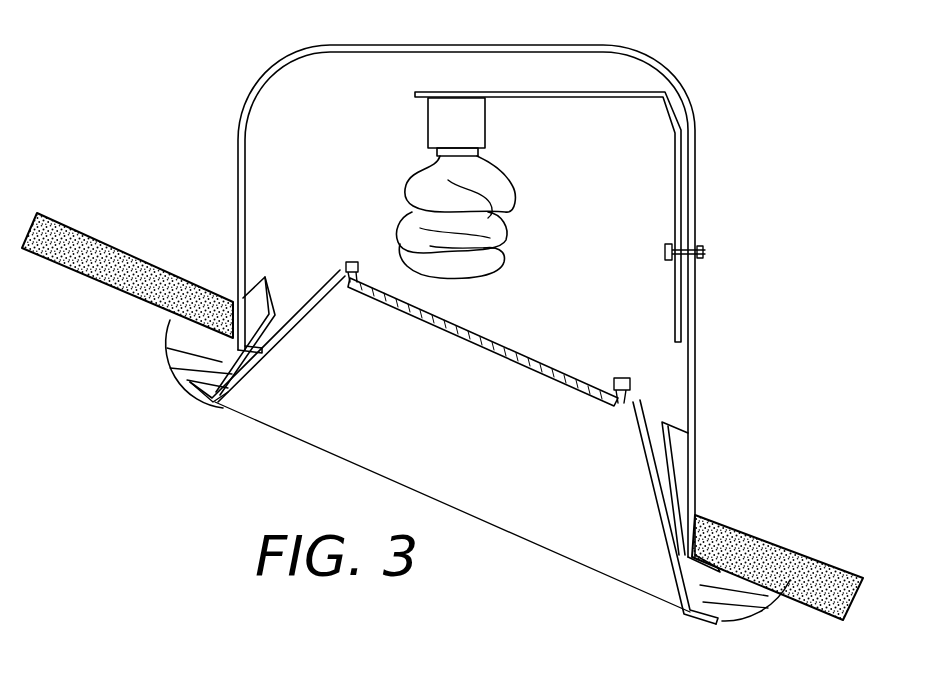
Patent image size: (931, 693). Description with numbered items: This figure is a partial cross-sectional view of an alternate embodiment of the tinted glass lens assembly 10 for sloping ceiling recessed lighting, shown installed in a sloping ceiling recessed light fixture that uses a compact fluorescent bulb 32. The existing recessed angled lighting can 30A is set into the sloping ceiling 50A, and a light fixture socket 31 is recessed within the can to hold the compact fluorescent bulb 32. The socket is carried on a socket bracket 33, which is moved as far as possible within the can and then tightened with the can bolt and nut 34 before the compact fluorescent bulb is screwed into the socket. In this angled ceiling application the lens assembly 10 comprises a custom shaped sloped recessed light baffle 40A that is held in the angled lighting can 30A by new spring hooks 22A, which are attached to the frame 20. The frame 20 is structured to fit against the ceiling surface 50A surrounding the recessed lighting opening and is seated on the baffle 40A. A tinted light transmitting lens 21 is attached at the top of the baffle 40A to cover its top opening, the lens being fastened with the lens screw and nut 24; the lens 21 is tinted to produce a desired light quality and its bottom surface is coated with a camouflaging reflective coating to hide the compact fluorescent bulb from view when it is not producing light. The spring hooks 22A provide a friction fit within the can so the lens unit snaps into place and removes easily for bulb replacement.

The tinted lens and frame assembly 10 is at (192, 425).
The frame 20 is at (767, 597).
The tinted light transmitting lens 21 is at (393, 305).
The spring hooks 22A is at (278, 298).
The lens screw and nut 24 is at (616, 410).
The recessed angled lighting can 30A is at (237, 160).
The light fixture socket 31 is at (528, 110).
The compact fluorescent bulb 32 is at (417, 205).
The socket bracket 33 is at (615, 98).
The can bolt and nut 34 is at (666, 262).
The sloped recessed light baffle 40A is at (672, 548).
The sloping ceiling surface 50A is at (76, 228).